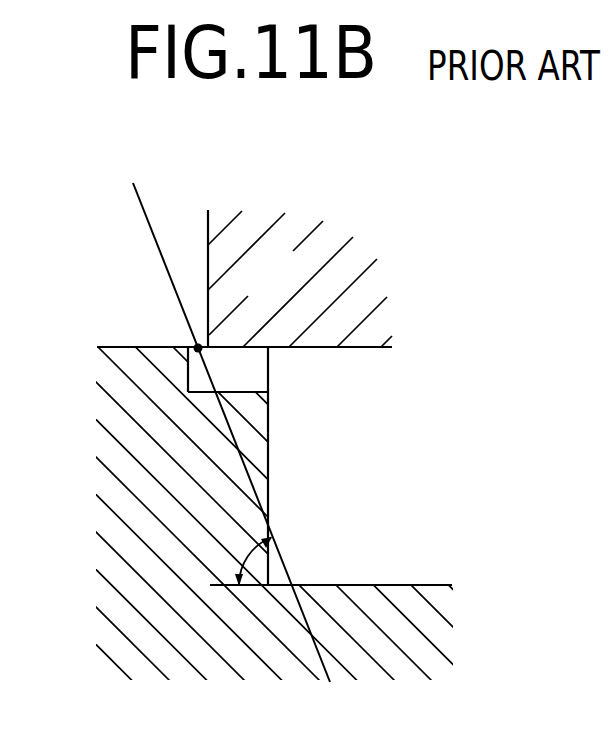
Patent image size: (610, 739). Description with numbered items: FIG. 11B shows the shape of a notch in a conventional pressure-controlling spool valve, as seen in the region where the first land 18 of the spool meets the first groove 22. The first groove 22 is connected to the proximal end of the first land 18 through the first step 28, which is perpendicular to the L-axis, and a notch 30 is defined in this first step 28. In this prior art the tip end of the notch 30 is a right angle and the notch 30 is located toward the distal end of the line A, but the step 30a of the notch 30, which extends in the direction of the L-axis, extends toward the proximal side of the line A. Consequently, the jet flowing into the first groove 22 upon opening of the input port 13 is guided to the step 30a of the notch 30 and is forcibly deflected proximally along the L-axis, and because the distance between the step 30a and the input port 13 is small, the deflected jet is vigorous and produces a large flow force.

The input port 13 is at (208, 243).
The first land 18 is at (133, 347).
The first groove 22 is at (388, 585).
The first step 28 is at (268, 453).
The notch 30 is at (198, 374).
The step of the notch 30a is at (238, 392).
The contact point a is at (196, 346).
The line A is at (268, 493).